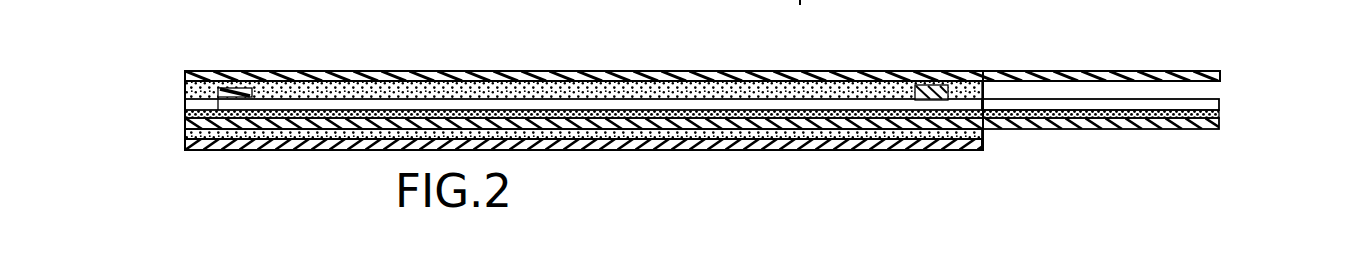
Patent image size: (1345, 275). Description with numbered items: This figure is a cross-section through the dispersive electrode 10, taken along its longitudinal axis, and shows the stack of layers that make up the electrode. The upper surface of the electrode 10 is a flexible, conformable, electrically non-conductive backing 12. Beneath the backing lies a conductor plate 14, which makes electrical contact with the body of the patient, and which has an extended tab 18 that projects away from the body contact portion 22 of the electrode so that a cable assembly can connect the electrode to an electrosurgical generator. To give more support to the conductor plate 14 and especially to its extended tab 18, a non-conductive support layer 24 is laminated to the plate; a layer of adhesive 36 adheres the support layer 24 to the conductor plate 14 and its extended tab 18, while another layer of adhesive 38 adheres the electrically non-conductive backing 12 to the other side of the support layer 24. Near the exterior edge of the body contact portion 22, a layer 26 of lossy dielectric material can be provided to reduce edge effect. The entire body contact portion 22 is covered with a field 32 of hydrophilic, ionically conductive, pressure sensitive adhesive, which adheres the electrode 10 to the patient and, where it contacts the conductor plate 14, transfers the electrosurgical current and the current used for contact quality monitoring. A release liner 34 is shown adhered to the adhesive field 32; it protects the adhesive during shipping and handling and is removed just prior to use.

The dispersive electrode 10 is at (1048, 158).
The electrically non-conductive backing 12 is at (625, 152).
The conductor plate 14 is at (184, 107).
The extended tab 18 is at (1205, 100).
The body contact portion 22 is at (954, 164).
The non-conductive support layer 24 is at (1170, 130).
The layer of lossy dielectric material 26 is at (233, 78).
The field of hydrophilic, ionically conductive, pressure sensitive adhesive 32 is at (310, 86).
The release liner 34 is at (372, 71).
The layer of adhesive 36 is at (1220, 115).
The layer of adhesive 38 is at (185, 132).